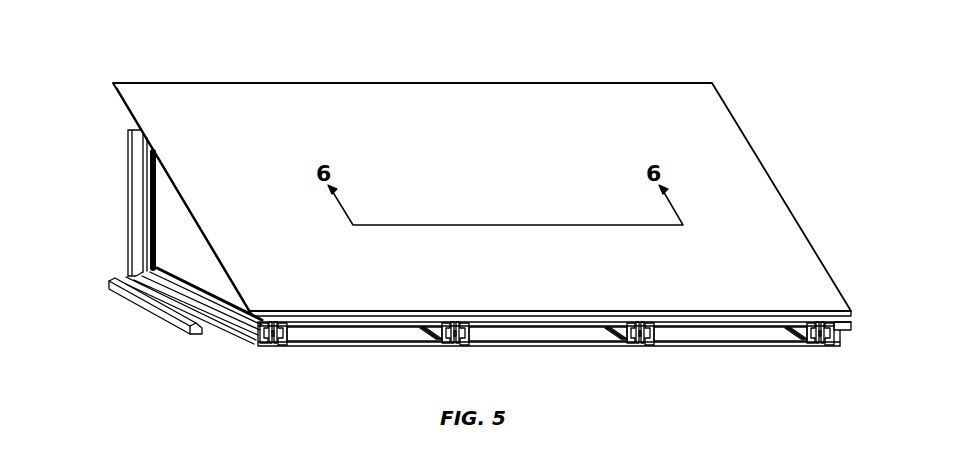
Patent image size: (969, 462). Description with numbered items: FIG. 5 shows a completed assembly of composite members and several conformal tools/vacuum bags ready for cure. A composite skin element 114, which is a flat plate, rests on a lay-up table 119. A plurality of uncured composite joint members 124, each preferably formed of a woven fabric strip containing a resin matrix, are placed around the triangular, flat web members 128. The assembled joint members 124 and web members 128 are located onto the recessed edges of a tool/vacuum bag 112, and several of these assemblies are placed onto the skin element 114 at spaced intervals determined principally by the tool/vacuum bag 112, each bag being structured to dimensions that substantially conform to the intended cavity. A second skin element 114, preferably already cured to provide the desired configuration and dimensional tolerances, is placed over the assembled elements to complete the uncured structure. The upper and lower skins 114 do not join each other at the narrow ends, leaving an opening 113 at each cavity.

The tool/vacuum bag 112 is at (350, 322).
The opening 113 is at (782, 334).
The composite skin element 114 is at (452, 102).
The lay-up table 119 is at (183, 317).
The composite joint member 124 is at (148, 210).
The web member 128 is at (200, 260).